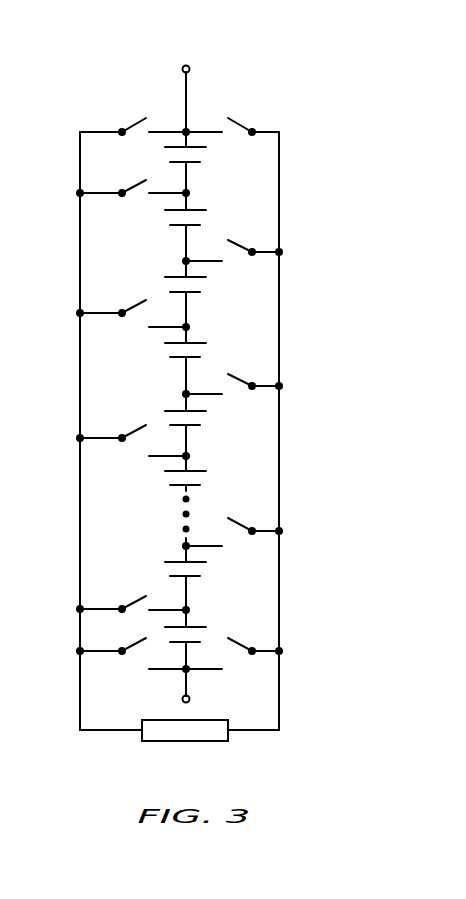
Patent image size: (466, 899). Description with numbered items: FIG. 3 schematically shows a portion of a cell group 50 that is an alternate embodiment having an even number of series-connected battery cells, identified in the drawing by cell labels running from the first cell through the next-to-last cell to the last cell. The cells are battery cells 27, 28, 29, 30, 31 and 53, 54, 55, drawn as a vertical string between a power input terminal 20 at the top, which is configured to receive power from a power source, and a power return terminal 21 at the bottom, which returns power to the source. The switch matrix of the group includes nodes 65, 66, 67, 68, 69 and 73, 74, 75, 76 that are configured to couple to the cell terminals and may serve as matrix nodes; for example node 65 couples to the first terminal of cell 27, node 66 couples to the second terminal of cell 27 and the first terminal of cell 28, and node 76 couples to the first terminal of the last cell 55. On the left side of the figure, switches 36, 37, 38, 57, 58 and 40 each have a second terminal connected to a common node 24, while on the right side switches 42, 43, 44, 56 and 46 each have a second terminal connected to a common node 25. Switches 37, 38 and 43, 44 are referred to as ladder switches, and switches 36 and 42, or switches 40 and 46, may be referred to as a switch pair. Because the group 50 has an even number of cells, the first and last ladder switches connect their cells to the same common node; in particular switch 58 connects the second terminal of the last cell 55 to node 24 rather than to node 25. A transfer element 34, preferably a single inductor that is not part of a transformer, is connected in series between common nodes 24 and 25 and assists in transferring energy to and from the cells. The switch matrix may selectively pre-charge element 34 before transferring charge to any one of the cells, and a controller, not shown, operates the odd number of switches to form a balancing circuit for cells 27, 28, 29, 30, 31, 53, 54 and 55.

The cell group 50 is at (95, 59).
The power input terminal 20 is at (182, 63).
The power return terminal 21 is at (191, 702).
The common node 24 is at (78, 381).
The common node 25 is at (280, 300).
The transfer element 34 is at (205, 741).
The battery cell 27 is at (200, 155).
The battery cell 28 is at (200, 218).
The battery cell 29 is at (200, 284).
The battery cell 30 is at (200, 353).
The battery cell 31 is at (200, 420).
The battery cell 53 is at (200, 483).
The battery cell 54 is at (200, 572).
The battery cell 55 is at (200, 640).
The node 65 is at (190, 130).
The node 66 is at (184, 192).
The node 67 is at (184, 259).
The node 68 is at (184, 325).
The node 69 is at (184, 392).
The node 73 is at (184, 454).
The node 74 is at (184, 543).
The node 75 is at (184, 608).
The node 76 is at (180, 676).
The switch 36 is at (125, 127).
The ladder switch 37 is at (125, 188).
The ladder switch 38 is at (125, 309).
The switch 57 is at (125, 433).
The switch 58 is at (125, 605).
The switch 40 is at (125, 649).
The switch 42 is at (240, 125).
The ladder switch 43 is at (240, 246).
The ladder switch 44 is at (240, 380).
The switch 56 is at (240, 527).
The switch 46 is at (240, 645).